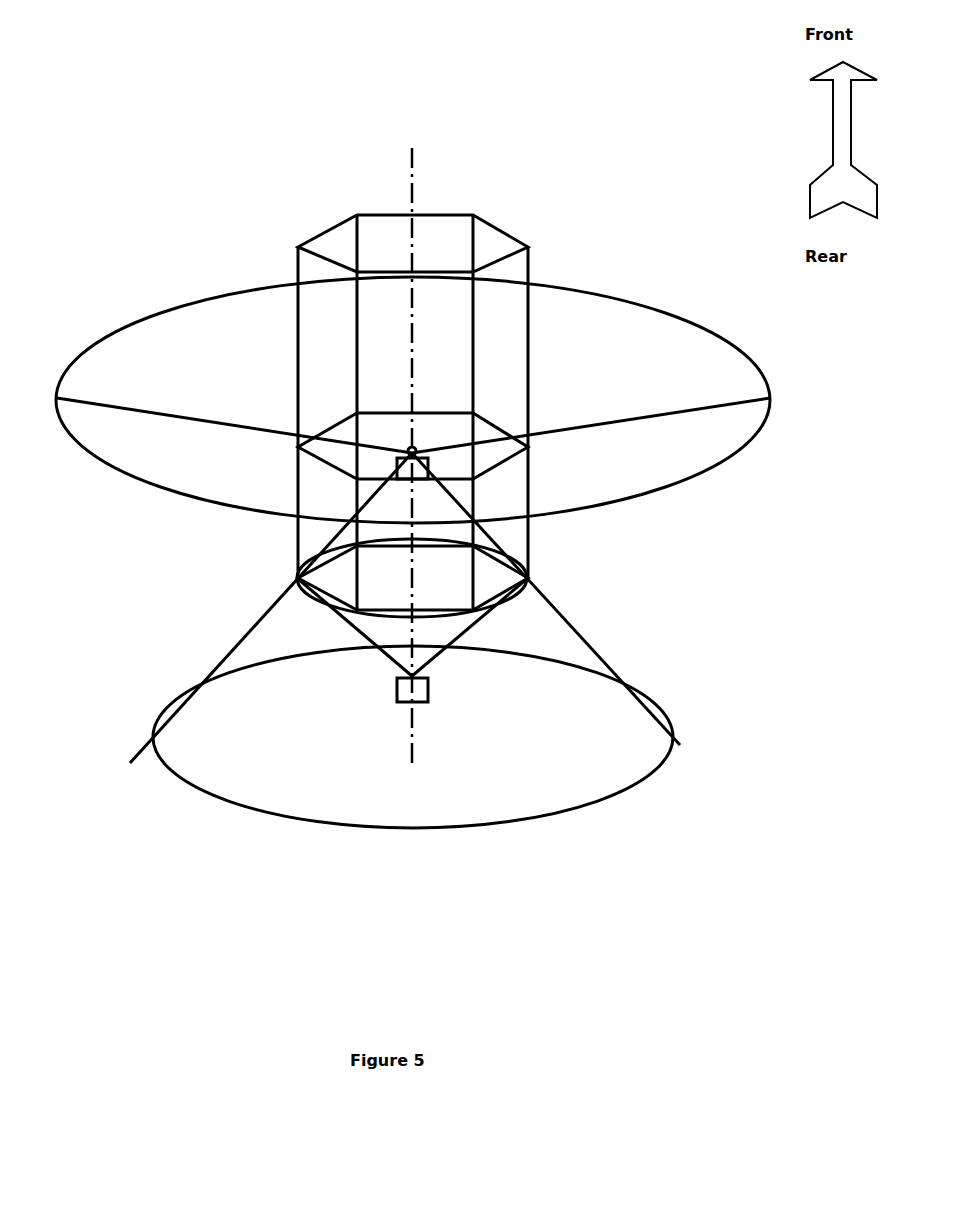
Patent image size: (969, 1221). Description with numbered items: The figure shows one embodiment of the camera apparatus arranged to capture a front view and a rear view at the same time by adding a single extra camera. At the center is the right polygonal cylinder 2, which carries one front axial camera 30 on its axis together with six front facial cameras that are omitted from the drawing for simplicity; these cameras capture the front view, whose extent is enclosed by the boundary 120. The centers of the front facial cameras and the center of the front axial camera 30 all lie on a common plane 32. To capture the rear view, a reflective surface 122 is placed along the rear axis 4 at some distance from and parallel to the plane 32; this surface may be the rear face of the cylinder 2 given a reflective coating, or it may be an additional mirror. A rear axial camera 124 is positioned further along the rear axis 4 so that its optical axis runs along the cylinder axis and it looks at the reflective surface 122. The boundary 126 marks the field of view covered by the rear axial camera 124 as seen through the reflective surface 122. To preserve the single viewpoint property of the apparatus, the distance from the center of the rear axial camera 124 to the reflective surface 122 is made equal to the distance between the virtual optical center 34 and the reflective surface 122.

The cylinder 2 is at (452, 235).
The rear axis 4 is at (412, 165).
The front axial camera 30 is at (408, 462).
The plane 32 is at (483, 456).
The virtual optical center 34 is at (410, 453).
The front view boundary 120 is at (130, 318).
The reflective surface 122 is at (340, 578).
The rear axial camera 124 is at (410, 690).
The rear field of view boundary 126 is at (163, 763).